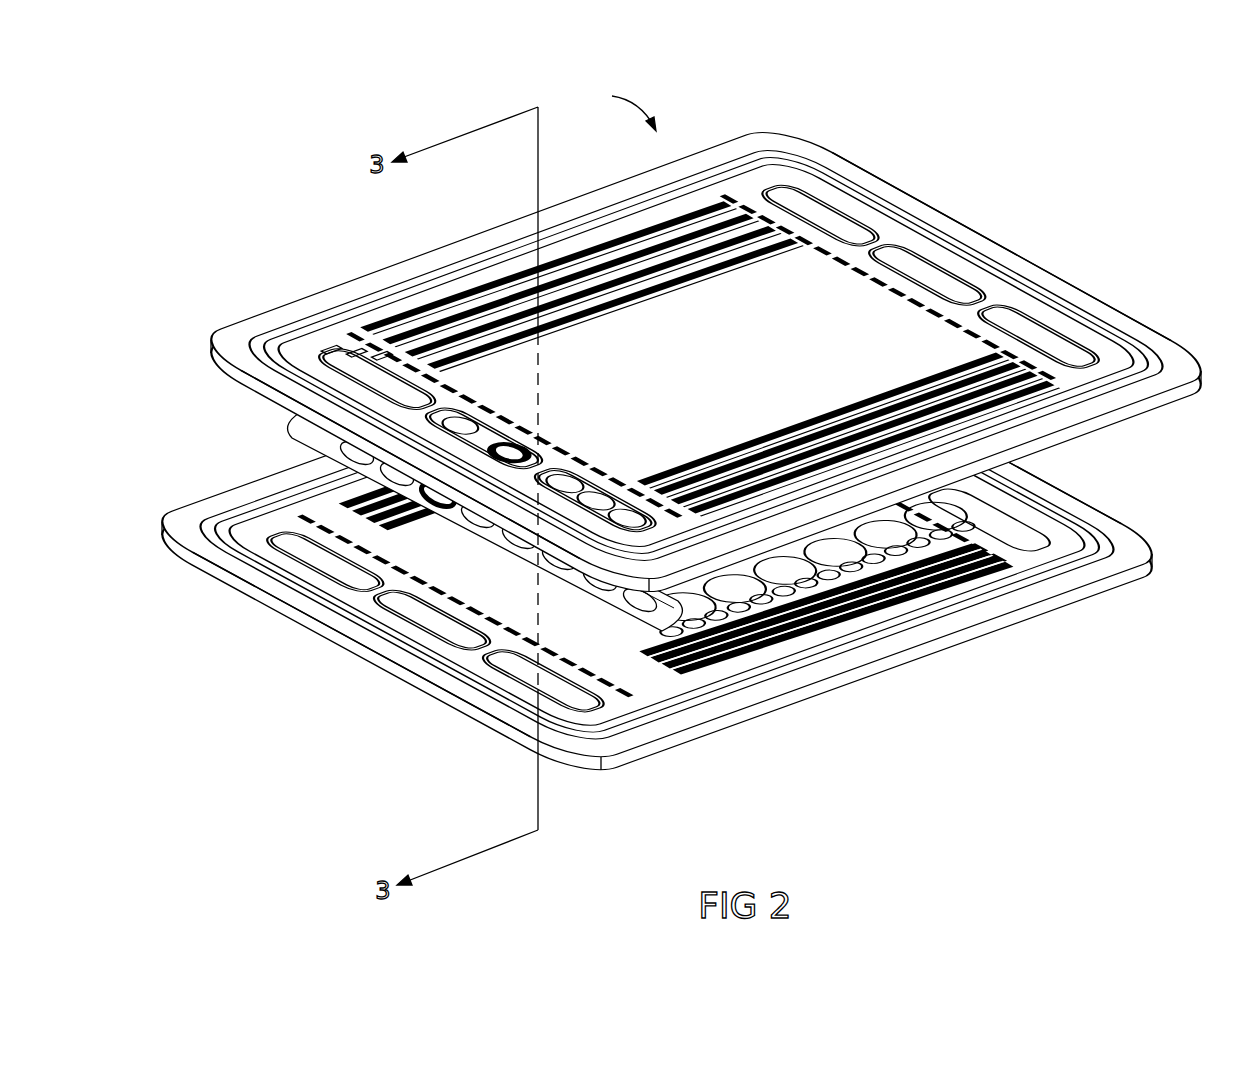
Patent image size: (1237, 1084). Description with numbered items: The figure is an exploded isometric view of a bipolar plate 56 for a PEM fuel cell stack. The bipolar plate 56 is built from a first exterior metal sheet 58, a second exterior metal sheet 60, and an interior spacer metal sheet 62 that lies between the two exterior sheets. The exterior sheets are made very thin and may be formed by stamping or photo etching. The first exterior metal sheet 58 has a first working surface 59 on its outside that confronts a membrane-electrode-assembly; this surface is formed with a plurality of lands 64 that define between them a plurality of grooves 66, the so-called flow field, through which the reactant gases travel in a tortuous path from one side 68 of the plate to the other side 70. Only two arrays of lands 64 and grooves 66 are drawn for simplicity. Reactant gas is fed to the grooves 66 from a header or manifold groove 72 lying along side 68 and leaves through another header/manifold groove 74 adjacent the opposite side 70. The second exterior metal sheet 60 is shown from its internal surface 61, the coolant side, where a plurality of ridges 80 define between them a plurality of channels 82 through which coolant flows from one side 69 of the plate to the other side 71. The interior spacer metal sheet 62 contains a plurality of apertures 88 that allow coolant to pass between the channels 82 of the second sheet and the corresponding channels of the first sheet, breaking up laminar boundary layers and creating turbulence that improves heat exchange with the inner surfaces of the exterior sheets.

The bipolar plate 56 is at (617, 103).
The first exterior metal sheet 58 is at (1185, 368).
The first working surface 59 is at (680, 327).
The second exterior metal sheet 60 is at (1117, 570).
The internal surface 61 is at (507, 583).
The interior spacer metal sheet 62 is at (1013, 489).
The lands 64 is at (517, 300).
The grooves 66 is at (457, 310).
The one side of the bipolar plate 68 is at (873, 183).
The one side of the bipolar plate 69 is at (1103, 522).
The other side of the bipolar plate 70 is at (247, 364).
The other side of the bipolar plate 71 is at (503, 717).
The header or manifold groove 72 is at (804, 228).
The header/manifold groove 74 is at (383, 356).
The ridges 80 is at (730, 657).
The channels 82 is at (813, 613).
The apertures 88 is at (973, 510).